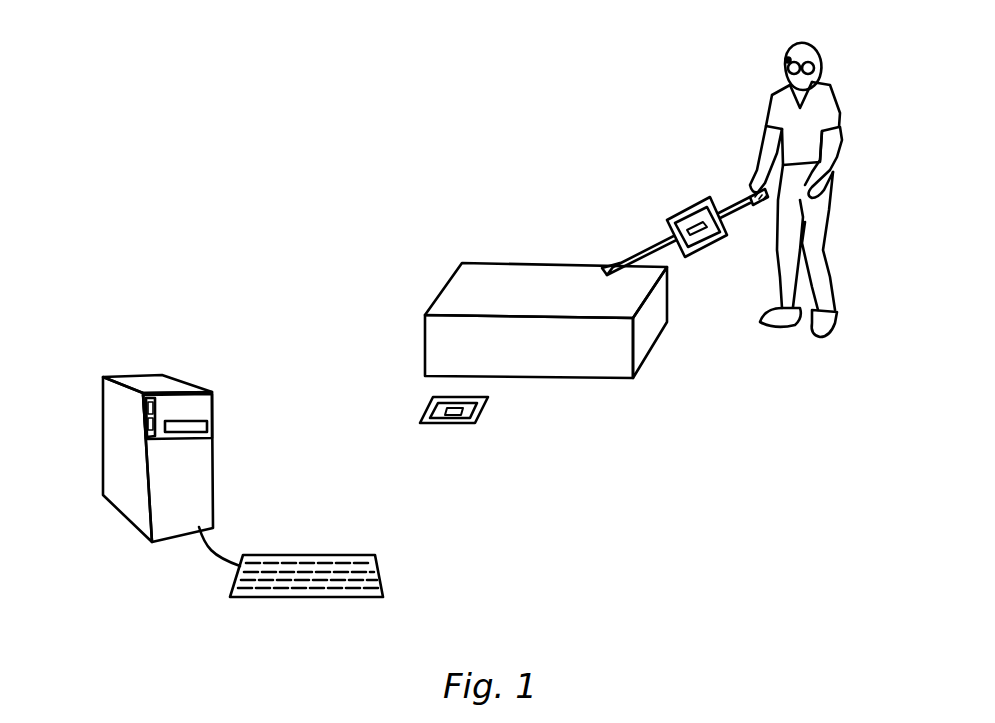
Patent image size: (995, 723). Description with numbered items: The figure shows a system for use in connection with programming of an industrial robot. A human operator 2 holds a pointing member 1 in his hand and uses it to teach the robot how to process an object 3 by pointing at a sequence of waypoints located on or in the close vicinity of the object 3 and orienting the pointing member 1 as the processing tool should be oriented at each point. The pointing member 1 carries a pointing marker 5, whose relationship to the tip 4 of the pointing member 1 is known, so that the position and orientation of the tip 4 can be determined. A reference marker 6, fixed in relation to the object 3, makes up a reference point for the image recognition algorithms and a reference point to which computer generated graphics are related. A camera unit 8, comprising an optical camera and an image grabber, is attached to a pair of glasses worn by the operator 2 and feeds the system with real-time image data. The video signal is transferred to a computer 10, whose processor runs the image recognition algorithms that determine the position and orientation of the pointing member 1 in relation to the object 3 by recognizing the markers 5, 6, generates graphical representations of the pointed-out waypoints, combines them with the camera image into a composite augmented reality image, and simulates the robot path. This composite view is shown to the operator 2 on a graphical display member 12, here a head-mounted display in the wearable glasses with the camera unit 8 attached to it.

The pointing member 1 is at (643, 243).
The human operator 2 is at (825, 107).
The object 3 is at (572, 360).
The tip 4 is at (605, 273).
The pointing marker 5 is at (690, 207).
The reference marker 6 is at (452, 424).
The camera unit 8 is at (788, 56).
The computer 10 is at (112, 422).
The graphical display member 12 is at (788, 68).